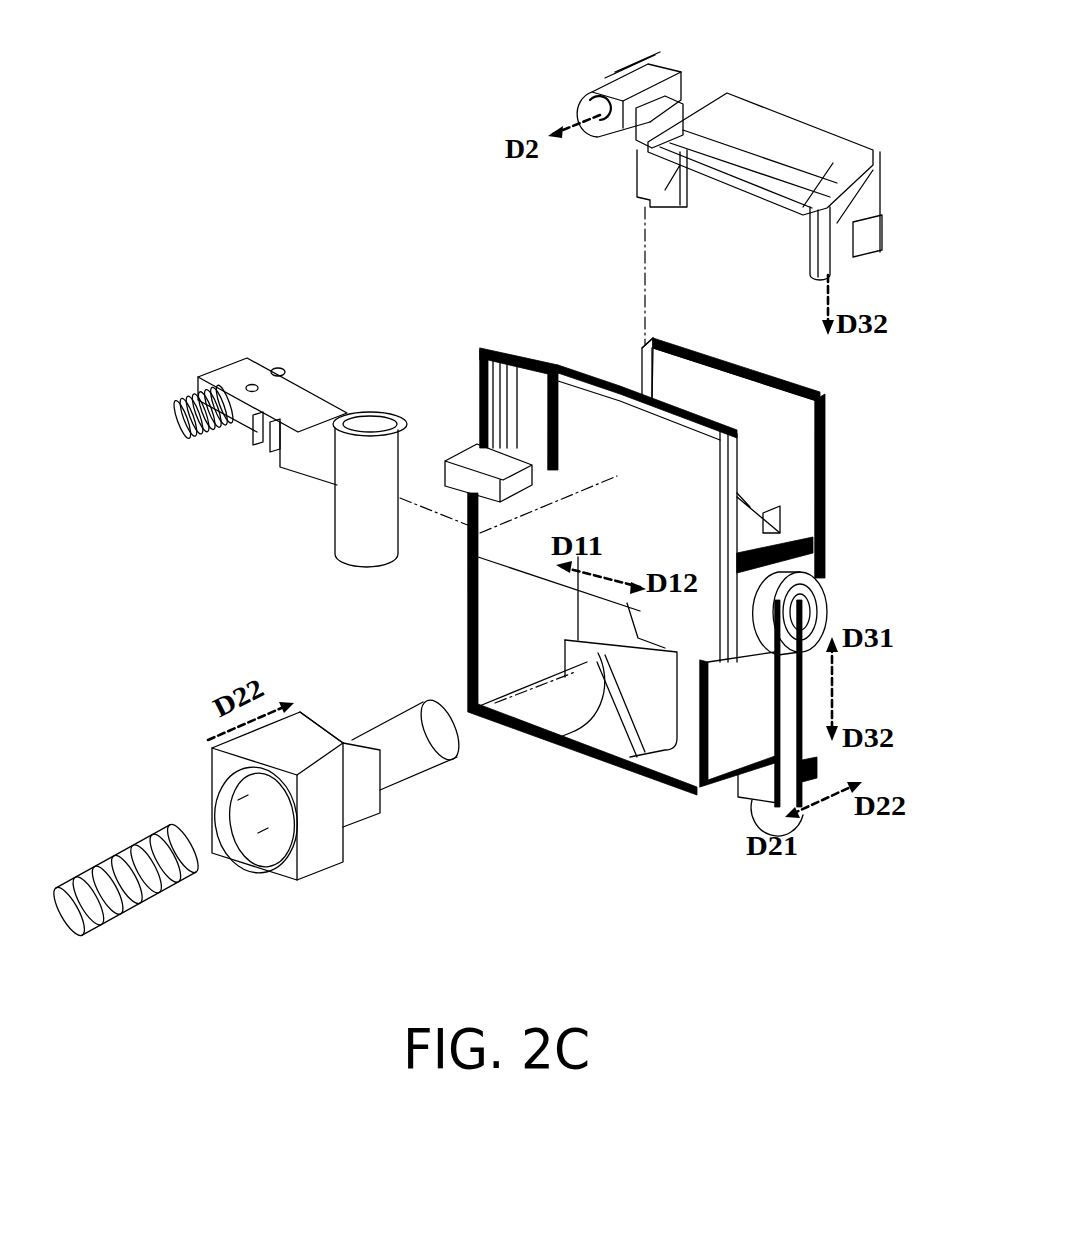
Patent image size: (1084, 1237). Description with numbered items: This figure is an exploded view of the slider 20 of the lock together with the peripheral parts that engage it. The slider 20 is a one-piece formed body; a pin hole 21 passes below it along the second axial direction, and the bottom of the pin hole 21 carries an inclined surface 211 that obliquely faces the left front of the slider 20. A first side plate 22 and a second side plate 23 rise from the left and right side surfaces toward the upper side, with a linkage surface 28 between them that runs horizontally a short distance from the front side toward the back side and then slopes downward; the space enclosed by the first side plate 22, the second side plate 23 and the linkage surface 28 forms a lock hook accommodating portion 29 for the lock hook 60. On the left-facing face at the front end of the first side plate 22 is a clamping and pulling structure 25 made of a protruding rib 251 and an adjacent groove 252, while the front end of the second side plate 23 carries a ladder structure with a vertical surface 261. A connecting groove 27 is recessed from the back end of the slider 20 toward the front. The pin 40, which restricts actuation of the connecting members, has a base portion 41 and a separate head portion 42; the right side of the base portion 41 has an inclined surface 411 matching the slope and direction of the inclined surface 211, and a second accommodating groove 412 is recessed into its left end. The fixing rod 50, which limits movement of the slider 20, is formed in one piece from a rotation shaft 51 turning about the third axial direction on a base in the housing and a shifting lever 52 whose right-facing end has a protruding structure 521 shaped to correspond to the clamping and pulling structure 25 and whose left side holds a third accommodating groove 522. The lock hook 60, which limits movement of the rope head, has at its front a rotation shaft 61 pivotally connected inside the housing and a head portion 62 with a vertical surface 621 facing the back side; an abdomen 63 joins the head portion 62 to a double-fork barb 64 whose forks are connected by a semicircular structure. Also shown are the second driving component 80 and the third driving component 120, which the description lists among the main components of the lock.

The slider 20 is at (665, 549).
The pin hole 21 is at (611, 730).
The inclined surface 211 is at (560, 740).
The first side plate 22 is at (573, 410).
The second side plate 23 is at (740, 403).
The clamping and pulling structure 25 is at (521, 382).
The protruding rib 251 is at (493, 355).
The groove 252 is at (540, 365).
The vertical surface 261 is at (657, 347).
The connecting groove 27 is at (803, 592).
The linkage surface 28 is at (750, 520).
The lock hook accommodating portion 29 is at (706, 382).
The pin 40 is at (342, 802).
The base portion 41 is at (306, 802).
The inclined surface 411 is at (360, 703).
The second accommodating groove 412 is at (263, 860).
The head portion 42 is at (409, 770).
The fixing rod 50 is at (263, 426).
The rotation shaft 51 is at (368, 417).
The shifting lever 52 is at (276, 399).
The protruding structure 521 is at (300, 367).
The third accommodating groove 522 is at (222, 436).
The third driving component 120 is at (175, 438).
The lock hook 60 is at (767, 144).
The rotation shaft 61 is at (683, 100).
The head portion 62 is at (753, 180).
The abdomen 63 is at (795, 150).
The barb 64 is at (882, 183).
The vertical surface 621 is at (683, 165).
The second driving component 80 is at (183, 893).